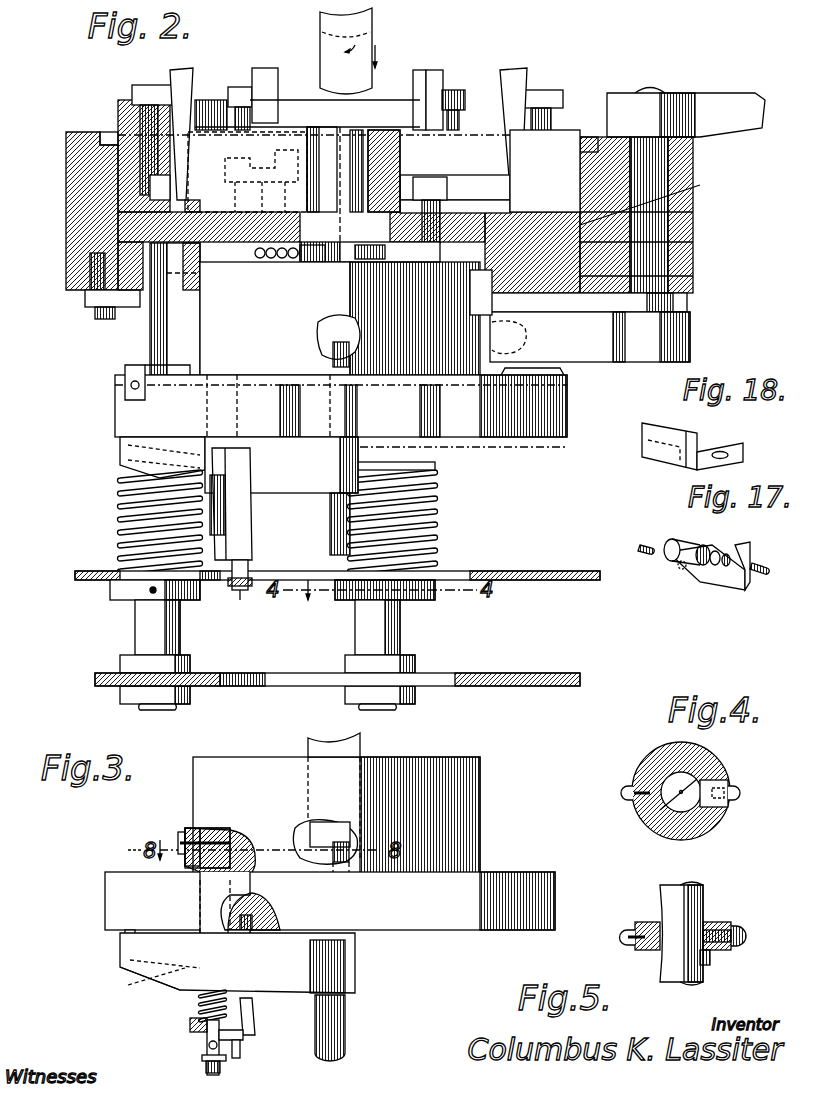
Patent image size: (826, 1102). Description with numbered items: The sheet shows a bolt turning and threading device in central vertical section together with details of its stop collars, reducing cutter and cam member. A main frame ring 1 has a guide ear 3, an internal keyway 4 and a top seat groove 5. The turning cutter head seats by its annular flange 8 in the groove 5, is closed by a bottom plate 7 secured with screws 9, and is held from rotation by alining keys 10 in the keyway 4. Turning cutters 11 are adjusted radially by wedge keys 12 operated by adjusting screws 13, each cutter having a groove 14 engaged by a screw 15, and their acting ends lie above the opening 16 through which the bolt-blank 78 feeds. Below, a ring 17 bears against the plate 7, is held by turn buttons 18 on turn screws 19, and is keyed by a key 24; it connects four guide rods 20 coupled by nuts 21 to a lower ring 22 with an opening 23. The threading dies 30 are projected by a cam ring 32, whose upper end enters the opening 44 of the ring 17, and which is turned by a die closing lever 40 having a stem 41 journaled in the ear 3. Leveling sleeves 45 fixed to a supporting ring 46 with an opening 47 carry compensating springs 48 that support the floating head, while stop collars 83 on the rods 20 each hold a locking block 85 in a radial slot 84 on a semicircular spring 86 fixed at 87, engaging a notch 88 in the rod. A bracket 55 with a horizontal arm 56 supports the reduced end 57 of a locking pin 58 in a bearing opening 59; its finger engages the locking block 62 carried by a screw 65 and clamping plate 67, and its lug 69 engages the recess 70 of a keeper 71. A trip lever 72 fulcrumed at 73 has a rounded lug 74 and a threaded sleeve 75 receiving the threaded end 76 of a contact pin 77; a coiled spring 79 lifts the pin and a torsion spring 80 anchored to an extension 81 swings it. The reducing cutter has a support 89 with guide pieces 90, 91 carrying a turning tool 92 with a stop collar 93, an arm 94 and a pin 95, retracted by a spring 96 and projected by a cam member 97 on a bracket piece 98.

In FIG. 2, the main frame ring 1 is at (72, 203).
In FIG. 2, the guide ear 3 is at (688, 152).
In FIG. 2, the internal keyway 4 is at (693, 242).
In FIG. 2, the annular seat groove 5 is at (100, 140).
In FIG. 2, the bottom plate 7 is at (540, 295).
In FIG. 2, the annular flange 8 is at (118, 132).
In FIG. 2, the screws 9 is at (345, 138).
In FIG. 2, the alining keys 10 is at (657, 198).
In FIG. 2, the turning cutters 11 is at (463, 135).
In FIG. 2, the wedge keys 12 is at (172, 75).
In FIG. 2, the adjusting screws 13 is at (135, 92).
In FIG. 2, the longitudinal groove 14 is at (477, 180).
In FIG. 2, the screw 15 is at (440, 180).
In FIG. 2, the opening 16 is at (340, 232).
In FIG. 2, the ring 17 is at (548, 312).
In FIG. 2, the turn buttons 18 is at (125, 300).
In FIG. 2, the turn screws 19 is at (88, 273).
In FIG. 2, the guide rods 20 is at (140, 625).
In FIG. 4, the guide rods 20 is at (665, 800).
In FIG. 5, the guide rods 20 is at (700, 902).
In FIG. 2, the nuts 21 is at (190, 665).
In FIG. 2, the lower ring 22 is at (548, 676).
In FIG. 2, the opening 23 is at (265, 676).
In FIG. 2, the key 24 is at (693, 276).
In FIG. 2, the threading dies 30 is at (300, 258).
In FIG. 2, the cam ring 32 is at (346, 318).
In FIG. 2, the die closing lever 40 is at (722, 103).
In FIG. 2, the stem 41 is at (693, 220).
In FIG. 2, the opening 44 is at (245, 262).
In FIG. 2, the leveling sleeves 45 is at (430, 486).
In FIG. 2, the supporting ring 46 is at (562, 578).
In FIG. 2, the opening 47 is at (293, 578).
In FIG. 2, the compensating springs 48 is at (430, 528).
In FIG. 2, the bracket 55 is at (250, 495).
In FIG. 3, the bracket 55 is at (255, 1005).
In FIG. 2, the horizontal arm 56 is at (245, 586).
In FIG. 3, the horizontal arm 56 is at (190, 1025).
In FIG. 3, the lower reduced end 57 is at (207, 1038).
In FIG. 3, the locking pin 58 is at (208, 918).
In FIG. 3, the bearing opening 59 is at (245, 893).
In FIG. 3, the locking block 62 is at (213, 828).
In FIG. 3, the screw 65 is at (178, 845).
In FIG. 3, the clamping plate 67 is at (190, 828).
In FIG. 3, the lateral locking lug 69 is at (250, 937).
In FIG. 3, the recess 70 is at (275, 926).
In FIG. 3, the locking block 71 is at (272, 915).
In FIG. 2, the trip lever 72 is at (125, 472).
In FIG. 3, the trip lever 72 is at (300, 963).
In FIG. 3, the fulcrum 73 is at (150, 975).
In FIG. 2, the rounded lug 74 is at (120, 437).
In FIG. 3, the rounded lug 74 is at (125, 935).
In FIG. 3, the threaded sleeve 75 is at (340, 980).
In FIG. 2, the lower threaded end 76 is at (332, 520).
In FIG. 3, the lower threaded end 76 is at (347, 1040).
In FIG. 2, the contact pin 77 is at (333, 350).
In FIG. 3, the contact pin 77 is at (392, 886).
In FIG. 2, the bolt-blank 78 is at (322, 58).
In FIG. 3, the bolt-blank 78 is at (313, 835).
In FIG. 3, the coiled spring 79 is at (243, 1030).
In FIG. 3, the torsion spring 80 is at (205, 1053).
In FIG. 3, the extension 81 is at (240, 1055).
In FIG. 2, the stop collars 83 is at (410, 602).
In FIG. 4, the radial slot 84 is at (724, 818).
In FIG. 4, the locking block 85 is at (728, 790).
In FIG. 5, the locking block 85 is at (722, 950).
In FIG. 4, the semicircular spring 86 is at (702, 768).
In FIG. 5, the semicircular spring 86 is at (731, 932).
In FIG. 4, the spring fixing point 87 is at (630, 797).
In FIG. 5, the spring fixing point 87 is at (630, 942).
In FIG. 4, the transverse notch 88 is at (670, 812).
In FIG. 5, the transverse notch 88 is at (706, 962).
In FIG. 17, the support 89 is at (714, 582).
In FIG. 17, the front guide piece 90 is at (747, 578).
In FIG. 17, the rear guide piece 91 is at (667, 545).
In FIG. 17, the turning tool 92 is at (770, 568).
In FIG. 17, the stop collar 93 is at (720, 550).
In FIG. 17, the laterally projecting arm 94 is at (681, 570).
In FIG. 17, the pin 95 is at (646, 554).
In FIG. 17, the coiled spring 96 is at (738, 556).
In FIG. 18, the cam member 97 is at (657, 423).
In FIG. 18, the bracket piece 98 is at (736, 448).